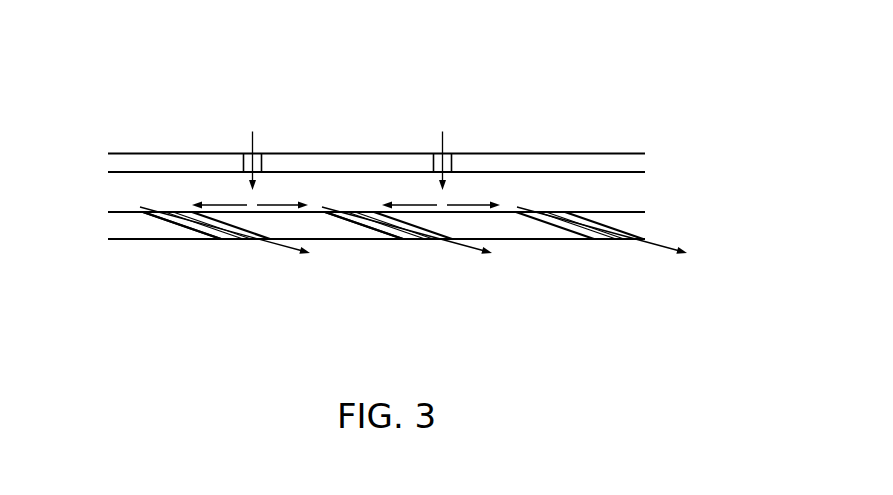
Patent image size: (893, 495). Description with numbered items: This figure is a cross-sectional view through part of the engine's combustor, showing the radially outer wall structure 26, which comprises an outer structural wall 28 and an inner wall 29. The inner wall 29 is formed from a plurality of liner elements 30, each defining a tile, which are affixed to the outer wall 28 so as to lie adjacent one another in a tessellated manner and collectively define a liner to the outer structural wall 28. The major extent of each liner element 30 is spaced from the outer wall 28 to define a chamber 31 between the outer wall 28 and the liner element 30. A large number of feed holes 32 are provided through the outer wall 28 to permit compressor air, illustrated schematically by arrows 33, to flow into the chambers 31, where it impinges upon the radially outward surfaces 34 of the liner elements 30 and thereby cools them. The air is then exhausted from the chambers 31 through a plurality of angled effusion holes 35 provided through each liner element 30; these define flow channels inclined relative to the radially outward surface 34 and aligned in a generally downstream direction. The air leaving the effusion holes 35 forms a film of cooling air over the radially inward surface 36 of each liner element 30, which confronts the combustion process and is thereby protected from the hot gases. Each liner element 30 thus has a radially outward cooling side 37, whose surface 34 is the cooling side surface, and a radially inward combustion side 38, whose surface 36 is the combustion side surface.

The radially outer wall structure 26 is at (606, 104).
The outer structural wall 28 is at (132, 162).
The inner wall 29 is at (118, 227).
The liner element 30 is at (496, 225).
The chamber 31 is at (360, 207).
The feed hole 32 is at (262, 160).
The flow arrow 33 is at (255, 137).
The radially outward surface 34 is at (120, 212).
The angled effusion hole 35 is at (220, 239).
The radially inward surface 36 is at (130, 242).
The cooling side 37 is at (640, 204).
The combustion side 38 is at (610, 256).